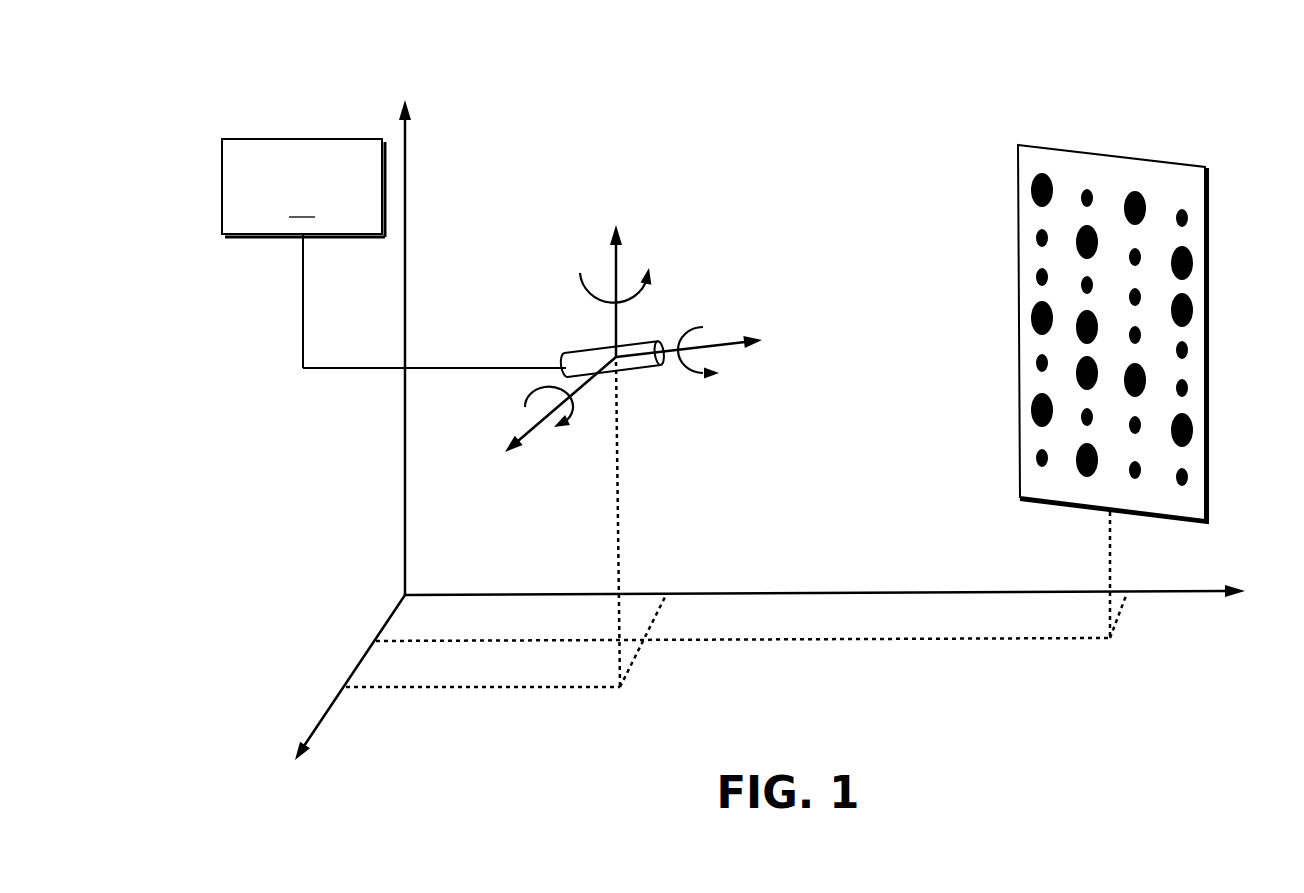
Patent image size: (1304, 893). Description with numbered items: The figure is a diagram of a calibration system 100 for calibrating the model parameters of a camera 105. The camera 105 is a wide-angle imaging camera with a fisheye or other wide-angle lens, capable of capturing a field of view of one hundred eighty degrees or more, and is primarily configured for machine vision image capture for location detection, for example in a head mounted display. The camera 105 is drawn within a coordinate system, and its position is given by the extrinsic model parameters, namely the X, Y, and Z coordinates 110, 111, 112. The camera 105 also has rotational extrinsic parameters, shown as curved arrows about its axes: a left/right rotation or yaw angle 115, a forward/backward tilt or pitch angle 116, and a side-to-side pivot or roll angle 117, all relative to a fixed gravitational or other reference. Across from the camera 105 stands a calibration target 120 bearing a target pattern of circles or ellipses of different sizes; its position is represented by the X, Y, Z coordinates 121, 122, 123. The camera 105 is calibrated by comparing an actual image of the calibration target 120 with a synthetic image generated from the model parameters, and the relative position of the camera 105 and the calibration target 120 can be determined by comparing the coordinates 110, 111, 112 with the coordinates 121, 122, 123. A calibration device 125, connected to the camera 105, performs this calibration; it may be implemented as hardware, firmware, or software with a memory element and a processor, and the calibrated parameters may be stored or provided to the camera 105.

The calibration system 100 is at (1206, 70).
The camera 105 is at (563, 355).
The X coordinate of the camera 110 is at (410, 689).
The Y coordinate of the camera 111 is at (632, 665).
The Z coordinate of the camera 112 is at (621, 523).
The yaw angle 115 is at (621, 305).
The pitch angle 116 is at (543, 388).
The roll angle 117 is at (690, 376).
The calibration target 120 is at (1210, 318).
The X coordinate of the calibration target 121 is at (1068, 643).
The Y coordinate of the calibration target 122 is at (1122, 617).
The Z coordinate of the calibration target 123 is at (1108, 568).
The calibration device 125 is at (303, 188).